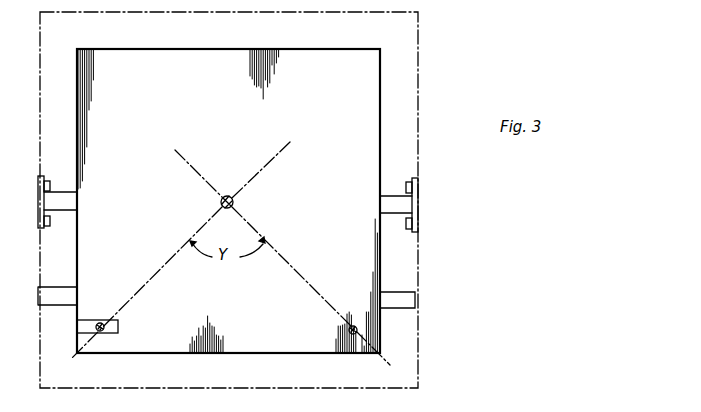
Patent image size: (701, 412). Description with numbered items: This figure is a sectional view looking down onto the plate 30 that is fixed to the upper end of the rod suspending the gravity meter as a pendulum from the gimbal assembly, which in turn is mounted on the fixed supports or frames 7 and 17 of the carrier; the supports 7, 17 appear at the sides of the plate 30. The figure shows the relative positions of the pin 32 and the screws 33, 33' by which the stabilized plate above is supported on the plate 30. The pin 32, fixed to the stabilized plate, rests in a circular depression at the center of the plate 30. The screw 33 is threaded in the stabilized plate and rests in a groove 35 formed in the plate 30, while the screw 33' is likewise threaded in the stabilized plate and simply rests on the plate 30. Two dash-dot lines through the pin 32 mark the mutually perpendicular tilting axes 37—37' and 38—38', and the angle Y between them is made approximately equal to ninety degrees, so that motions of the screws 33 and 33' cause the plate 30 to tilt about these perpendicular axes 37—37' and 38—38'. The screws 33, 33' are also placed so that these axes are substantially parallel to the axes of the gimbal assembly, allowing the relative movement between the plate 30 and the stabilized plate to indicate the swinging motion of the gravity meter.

The plate 30 is at (228, 343).
The fixed support 17 is at (58, 192).
The fixed support 7 is at (52, 287).
The groove 35 is at (82, 320).
The screw 33 is at (133, 332).
The screw 33' is at (320, 327).
The pin 32 is at (233, 202).
The axis end 37 is at (133, 294).
The axis end 37' is at (269, 162).
The axis end 38 is at (319, 294).
The axis end 38' is at (186, 165).